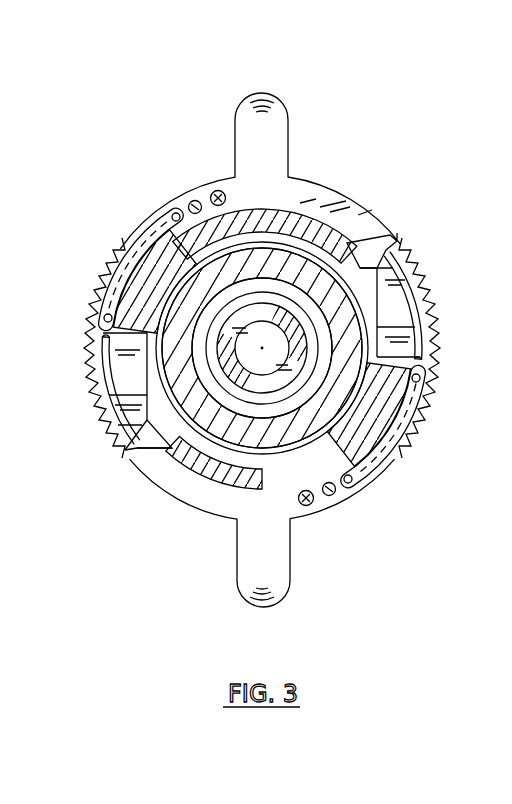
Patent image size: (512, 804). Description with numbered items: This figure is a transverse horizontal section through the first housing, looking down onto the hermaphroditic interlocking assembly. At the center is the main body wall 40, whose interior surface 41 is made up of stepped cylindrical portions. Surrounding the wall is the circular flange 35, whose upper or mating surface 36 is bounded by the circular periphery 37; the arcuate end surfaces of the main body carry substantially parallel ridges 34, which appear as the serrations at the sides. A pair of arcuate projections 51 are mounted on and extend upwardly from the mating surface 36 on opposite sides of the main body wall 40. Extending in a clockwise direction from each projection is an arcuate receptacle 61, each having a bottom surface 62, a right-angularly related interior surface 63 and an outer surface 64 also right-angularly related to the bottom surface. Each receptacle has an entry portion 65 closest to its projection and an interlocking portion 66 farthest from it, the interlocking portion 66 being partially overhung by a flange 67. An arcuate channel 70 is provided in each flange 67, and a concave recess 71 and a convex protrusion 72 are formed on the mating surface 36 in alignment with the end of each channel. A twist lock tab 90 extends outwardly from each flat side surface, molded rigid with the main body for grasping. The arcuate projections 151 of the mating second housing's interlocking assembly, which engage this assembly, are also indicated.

The ridges 34 is at (92, 392).
The circular flange 35 is at (335, 207).
The upper or mating surface 36 is at (318, 206).
The circular periphery 37 is at (362, 213).
The main body wall 40 is at (153, 460).
The interior surface 41 is at (338, 488).
The arcuate projections 51 is at (290, 210).
The arcuate receptacles 61 is at (112, 410).
The bottom surface 62 is at (131, 388).
The interior surface 63 is at (98, 396).
The outer surface 64 is at (95, 352).
The entry portion 65 is at (125, 420).
The interlocking portion 66 is at (125, 282).
The flange 67 is at (135, 237).
The arcuate channel 70 is at (166, 230).
The concave recess 71 is at (192, 200).
The convex protrusion 72 is at (213, 191).
The twist lock tab 90 is at (263, 93).
The arcuate projections 151 is at (185, 236).